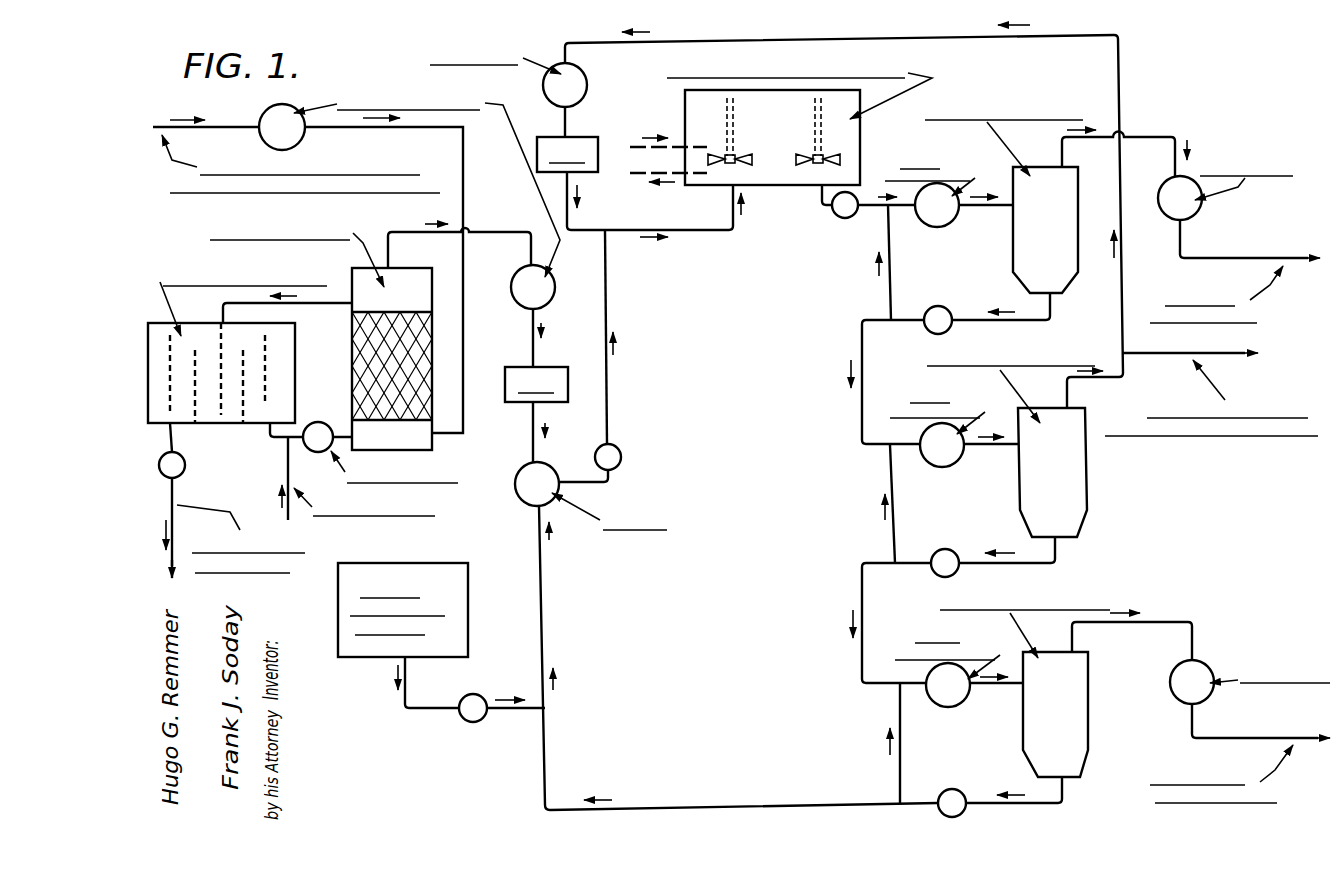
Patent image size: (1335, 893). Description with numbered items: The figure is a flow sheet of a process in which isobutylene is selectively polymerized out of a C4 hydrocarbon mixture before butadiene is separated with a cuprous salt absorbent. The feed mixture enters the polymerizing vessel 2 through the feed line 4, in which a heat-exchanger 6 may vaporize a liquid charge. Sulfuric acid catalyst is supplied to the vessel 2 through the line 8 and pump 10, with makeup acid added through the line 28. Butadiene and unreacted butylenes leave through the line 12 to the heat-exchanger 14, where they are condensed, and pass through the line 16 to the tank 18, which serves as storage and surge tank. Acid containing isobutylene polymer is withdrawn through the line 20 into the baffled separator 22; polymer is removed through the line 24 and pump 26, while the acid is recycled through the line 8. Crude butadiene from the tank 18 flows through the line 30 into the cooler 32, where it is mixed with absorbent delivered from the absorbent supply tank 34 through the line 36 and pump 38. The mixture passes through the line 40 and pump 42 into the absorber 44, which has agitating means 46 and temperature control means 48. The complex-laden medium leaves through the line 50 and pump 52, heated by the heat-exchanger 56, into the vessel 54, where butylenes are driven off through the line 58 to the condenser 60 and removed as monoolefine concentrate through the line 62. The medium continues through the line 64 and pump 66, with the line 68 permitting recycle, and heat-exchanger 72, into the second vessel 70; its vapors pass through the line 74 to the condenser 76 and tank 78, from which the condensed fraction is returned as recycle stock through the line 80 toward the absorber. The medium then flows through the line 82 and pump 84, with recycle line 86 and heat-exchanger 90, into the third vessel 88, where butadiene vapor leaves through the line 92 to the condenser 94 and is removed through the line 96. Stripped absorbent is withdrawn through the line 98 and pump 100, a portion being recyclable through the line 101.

The polymerizing vessel 2 is at (422, 356).
The feed line 4 is at (243, 126).
The heat-exchanger 6 is at (298, 136).
The line 8 is at (343, 436).
The pump 10 is at (317, 422).
The line 12 is at (400, 232).
The heat-exchanger 14 is at (527, 277).
The line 16 is at (531, 328).
The tank 18 is at (561, 367).
The line 20 is at (321, 307).
The separator 22 is at (278, 375).
The line 24 is at (172, 441).
The pump 26 is at (184, 473).
The line 28 is at (290, 470).
The line 30 is at (532, 430).
The cooler 32 is at (531, 498).
The absorbent supply tank 34 is at (338, 641).
The line 36 is at (548, 606).
The pump 38 is at (467, 719).
The line 40 is at (610, 383).
The pump 42 is at (621, 452).
The absorber 44 is at (777, 185).
The agitating means 46 is at (806, 157).
The temperature control means 48 is at (664, 171).
The line 50 is at (899, 208).
The pump 52 is at (831, 218).
The vessel 54 is at (1073, 223).
The heat-exchanger 56 is at (951, 221).
The line 58 is at (1146, 136).
The condenser 60 is at (1198, 210).
The line 62 is at (1238, 258).
The line 64 is at (1003, 322).
The pump 66 is at (938, 306).
The line 68 is at (885, 290).
The vessel 70 is at (1087, 481).
The heat-exchanger 72 is at (930, 462).
The line 74 is at (650, 44).
The condenser 76 is at (582, 86).
The tank 78 is at (589, 137).
The line from tank to absorber 80 is at (574, 217).
The line 82 is at (1000, 565).
The pump 84 is at (935, 576).
The line 86 is at (897, 523).
The vessel 88 is at (1090, 711).
The heat-exchanger 90 is at (945, 707).
The line 92 is at (1130, 626).
The condenser 94 is at (1212, 677).
The line 96 is at (1240, 738).
The line 98 is at (1070, 798).
The pump 100 is at (960, 792).
The line 101 is at (898, 771).